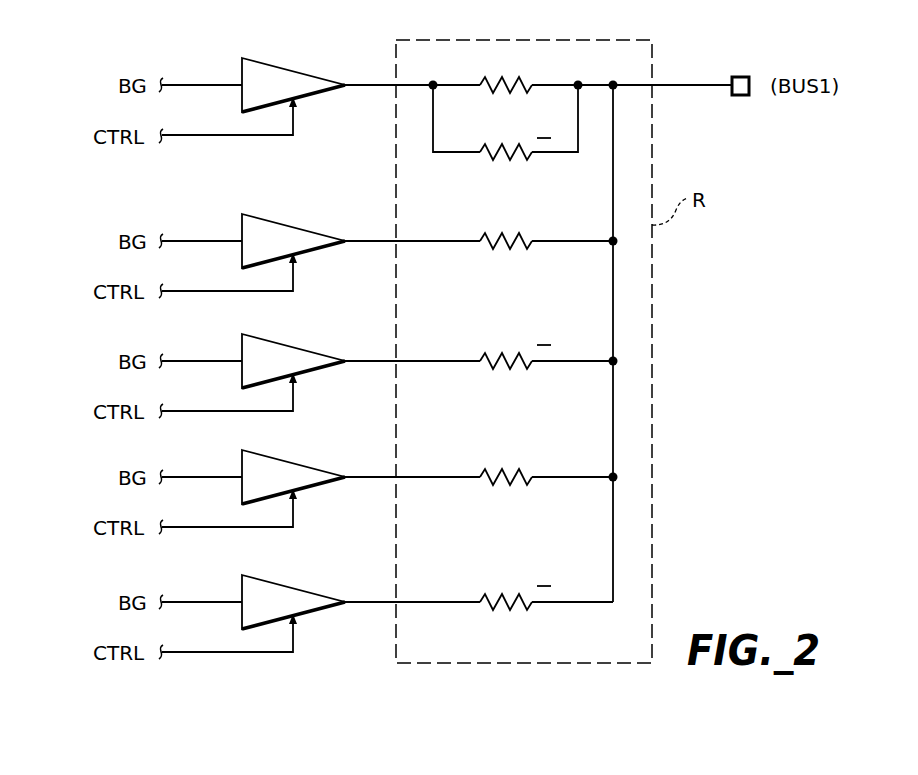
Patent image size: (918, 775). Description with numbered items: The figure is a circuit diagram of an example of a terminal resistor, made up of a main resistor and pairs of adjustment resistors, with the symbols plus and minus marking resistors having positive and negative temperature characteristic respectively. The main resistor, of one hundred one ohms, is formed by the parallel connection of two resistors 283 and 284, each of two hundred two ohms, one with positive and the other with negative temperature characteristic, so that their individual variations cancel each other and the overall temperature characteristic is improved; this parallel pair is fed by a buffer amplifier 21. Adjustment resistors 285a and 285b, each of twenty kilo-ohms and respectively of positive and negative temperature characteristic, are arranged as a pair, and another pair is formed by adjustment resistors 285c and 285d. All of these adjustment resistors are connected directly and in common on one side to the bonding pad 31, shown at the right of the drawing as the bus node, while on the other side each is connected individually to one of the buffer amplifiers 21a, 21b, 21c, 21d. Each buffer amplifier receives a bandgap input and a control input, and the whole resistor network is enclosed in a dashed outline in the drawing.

The buffer amplifier 21 is at (305, 74).
The buffer amplifier 21a is at (305, 230).
The buffer amplifier 21b is at (305, 350).
The buffer amplifier 21c is at (305, 466).
The buffer amplifier 21d is at (305, 591).
The resistor 283 is at (510, 92).
The resistor 284 is at (518, 160).
The adjustment resistor 285a is at (518, 249).
The adjustment resistor 285b is at (518, 369).
The adjustment resistor 285c is at (518, 485).
The adjustment resistor 285d is at (518, 610).
The bonding pad 31 is at (738, 97).